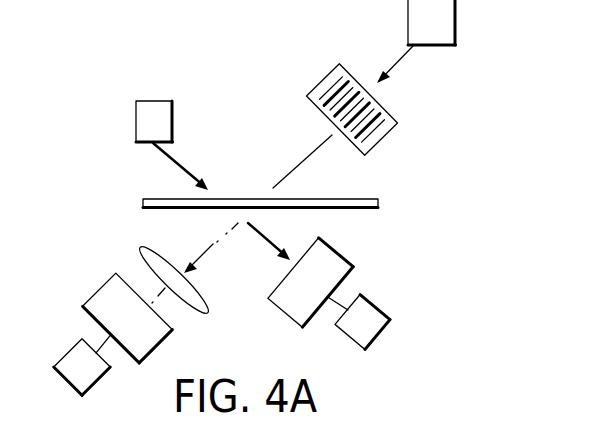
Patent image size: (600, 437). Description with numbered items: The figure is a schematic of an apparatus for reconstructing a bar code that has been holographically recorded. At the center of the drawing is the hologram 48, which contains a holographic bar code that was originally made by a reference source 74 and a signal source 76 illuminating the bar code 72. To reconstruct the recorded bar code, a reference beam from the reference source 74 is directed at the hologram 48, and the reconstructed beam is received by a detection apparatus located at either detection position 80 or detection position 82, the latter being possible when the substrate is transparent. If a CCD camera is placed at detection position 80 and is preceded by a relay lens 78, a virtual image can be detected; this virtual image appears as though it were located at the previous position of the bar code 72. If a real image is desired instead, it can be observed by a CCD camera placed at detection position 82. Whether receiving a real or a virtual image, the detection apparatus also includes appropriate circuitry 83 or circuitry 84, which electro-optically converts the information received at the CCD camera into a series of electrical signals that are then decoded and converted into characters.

The hologram 48 is at (379, 204).
The bar code 72 is at (383, 140).
The reference source 74 is at (173, 110).
The signal source 76 is at (408, 27).
The relay lens 78 is at (142, 247).
The detection position 80 is at (102, 288).
The detection position 82 is at (357, 257).
The circuitry 83 is at (72, 350).
The circuitry 84 is at (380, 310).